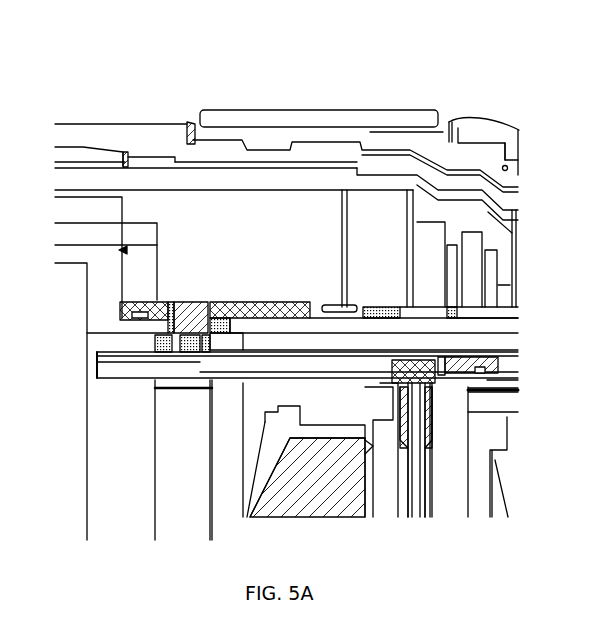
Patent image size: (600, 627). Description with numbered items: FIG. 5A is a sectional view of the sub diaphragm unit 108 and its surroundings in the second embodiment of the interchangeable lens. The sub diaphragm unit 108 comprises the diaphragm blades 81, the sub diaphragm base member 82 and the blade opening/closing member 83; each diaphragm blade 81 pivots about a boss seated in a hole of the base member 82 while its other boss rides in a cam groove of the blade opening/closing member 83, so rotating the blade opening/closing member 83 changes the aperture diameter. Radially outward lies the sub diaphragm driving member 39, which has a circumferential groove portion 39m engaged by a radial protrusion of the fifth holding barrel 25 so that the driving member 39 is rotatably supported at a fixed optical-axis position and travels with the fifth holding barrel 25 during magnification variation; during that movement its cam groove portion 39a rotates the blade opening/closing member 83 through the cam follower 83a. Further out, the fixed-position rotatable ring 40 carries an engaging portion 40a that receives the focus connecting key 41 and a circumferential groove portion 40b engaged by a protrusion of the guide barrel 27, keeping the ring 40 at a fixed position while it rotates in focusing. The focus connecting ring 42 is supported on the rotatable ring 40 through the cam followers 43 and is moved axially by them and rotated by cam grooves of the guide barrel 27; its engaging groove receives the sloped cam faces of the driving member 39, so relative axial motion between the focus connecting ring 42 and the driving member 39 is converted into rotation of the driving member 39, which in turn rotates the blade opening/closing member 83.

The fifth holding barrel 25 is at (487, 380).
The guide barrel 27 is at (75, 252).
The sub diaphragm driving member 39 is at (102, 353).
The cam groove portion 39a is at (310, 367).
The circumferential groove portion 39m is at (487, 350).
The fixed-position rotatable ring 40 is at (293, 302).
The engaging portion 40a is at (333, 305).
The circumferential groove portion 40b is at (138, 312).
The focus connecting key 41 is at (378, 308).
The focus connecting ring 42 is at (176, 302).
The cam followers 43 is at (200, 310).
The diaphragm blades 81 is at (423, 473).
The sub diaphragm base member 82 is at (430, 410).
The blade opening/closing member 83 is at (433, 400).
The cam follower 83a is at (445, 355).
The sub diaphragm unit 108 is at (430, 507).